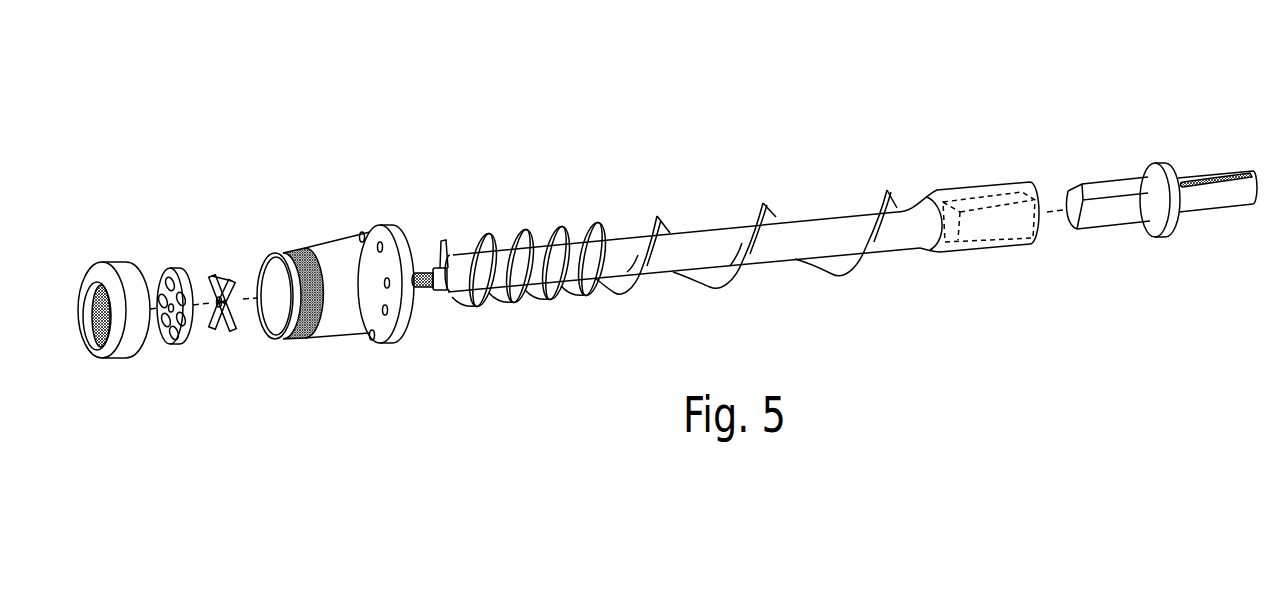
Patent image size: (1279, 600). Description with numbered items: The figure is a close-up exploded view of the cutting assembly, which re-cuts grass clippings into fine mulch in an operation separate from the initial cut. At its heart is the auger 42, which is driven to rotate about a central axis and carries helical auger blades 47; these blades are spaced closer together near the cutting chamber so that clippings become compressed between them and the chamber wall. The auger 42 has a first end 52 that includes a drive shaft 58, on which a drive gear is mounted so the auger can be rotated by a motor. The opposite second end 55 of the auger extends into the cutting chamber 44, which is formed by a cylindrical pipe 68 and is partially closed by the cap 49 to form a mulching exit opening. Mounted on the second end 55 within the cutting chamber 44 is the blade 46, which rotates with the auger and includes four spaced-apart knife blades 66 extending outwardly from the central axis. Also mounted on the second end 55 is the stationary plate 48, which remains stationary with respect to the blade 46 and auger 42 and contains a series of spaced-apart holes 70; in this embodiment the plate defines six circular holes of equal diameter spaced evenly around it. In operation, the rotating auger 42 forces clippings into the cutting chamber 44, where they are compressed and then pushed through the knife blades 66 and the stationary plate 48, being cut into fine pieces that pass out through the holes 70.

The auger 42 is at (902, 230).
The cutting chamber 44 is at (357, 287).
The blade 46 is at (226, 328).
The auger blades 47 is at (653, 227).
The stationary plate 48 is at (190, 333).
The cap 49 is at (130, 290).
The first end 52 is at (1023, 237).
The second end 55 is at (437, 290).
The drive shaft 58 is at (1107, 193).
The knife blades 66 is at (216, 272).
The cylindrical pipe 68 is at (328, 280).
The holes 70 is at (170, 267).